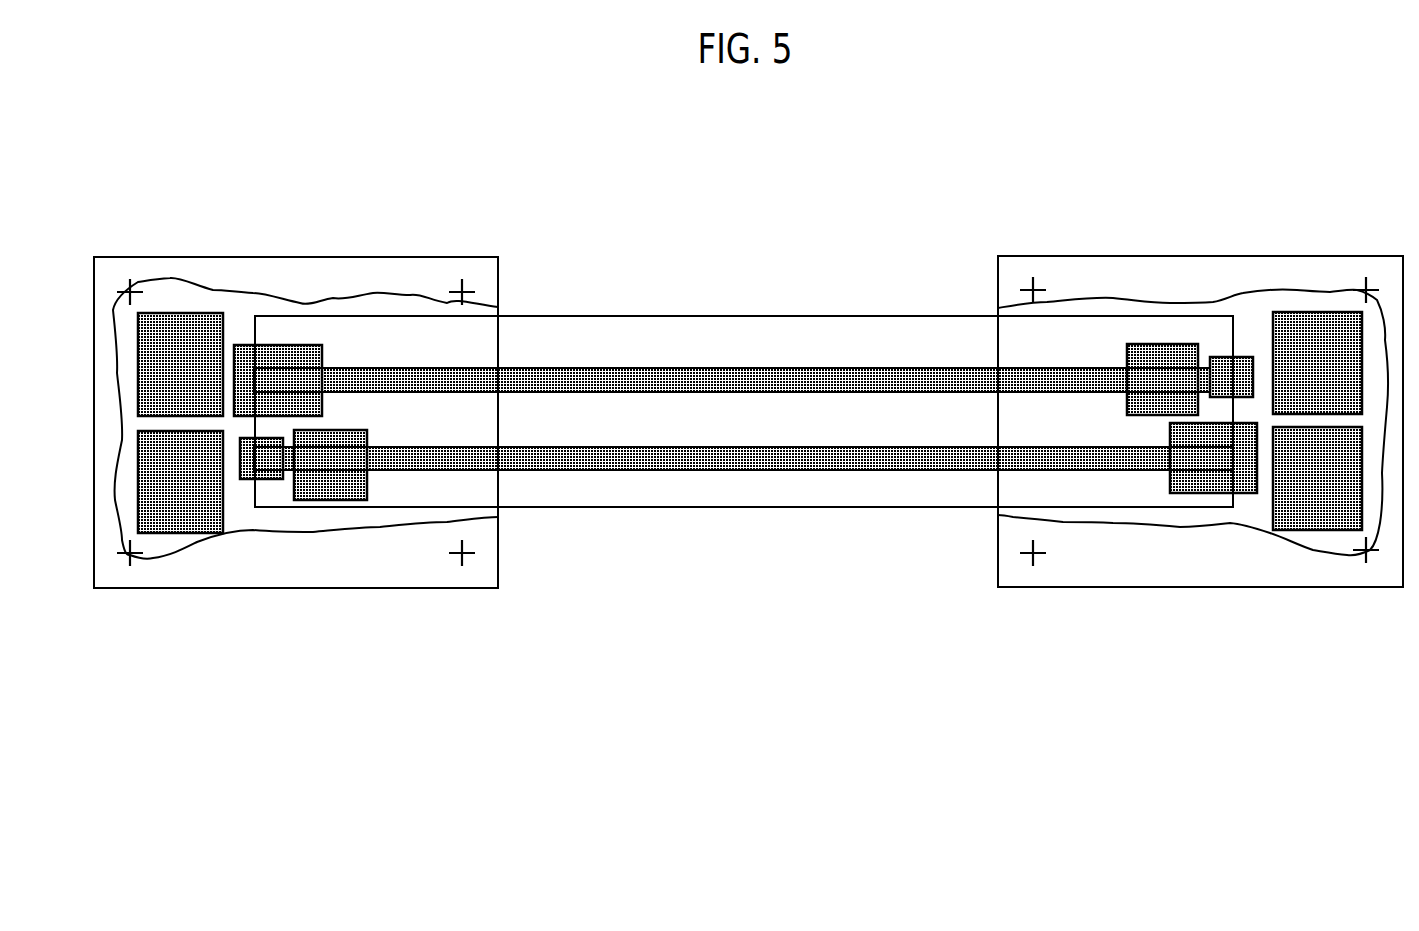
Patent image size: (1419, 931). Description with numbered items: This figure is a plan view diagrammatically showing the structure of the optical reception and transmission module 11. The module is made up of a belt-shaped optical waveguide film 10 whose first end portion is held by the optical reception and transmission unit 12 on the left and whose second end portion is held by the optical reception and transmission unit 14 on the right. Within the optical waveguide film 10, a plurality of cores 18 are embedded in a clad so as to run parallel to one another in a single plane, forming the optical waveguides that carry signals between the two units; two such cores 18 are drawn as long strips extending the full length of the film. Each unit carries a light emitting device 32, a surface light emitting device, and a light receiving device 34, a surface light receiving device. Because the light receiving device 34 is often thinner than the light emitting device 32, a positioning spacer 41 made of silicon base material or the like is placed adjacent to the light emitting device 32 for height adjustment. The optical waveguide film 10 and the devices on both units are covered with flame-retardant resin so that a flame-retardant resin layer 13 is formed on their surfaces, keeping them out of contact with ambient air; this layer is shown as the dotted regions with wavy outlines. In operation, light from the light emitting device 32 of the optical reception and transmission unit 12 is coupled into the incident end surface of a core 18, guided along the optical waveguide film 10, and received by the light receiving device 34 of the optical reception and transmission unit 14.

The optical waveguide film 10 is at (680, 313).
The optical reception and transmission module 11 is at (935, 183).
The optical reception and transmission unit 12 is at (372, 232).
The flame-retardant resin layer 13 is at (1248, 222).
The optical reception and transmission unit 14 is at (1322, 232).
The cores 18 is at (813, 452).
The light emitting device 32 is at (243, 477).
The light receiving device 34 is at (265, 225).
The positioning spacer 41 is at (342, 488).